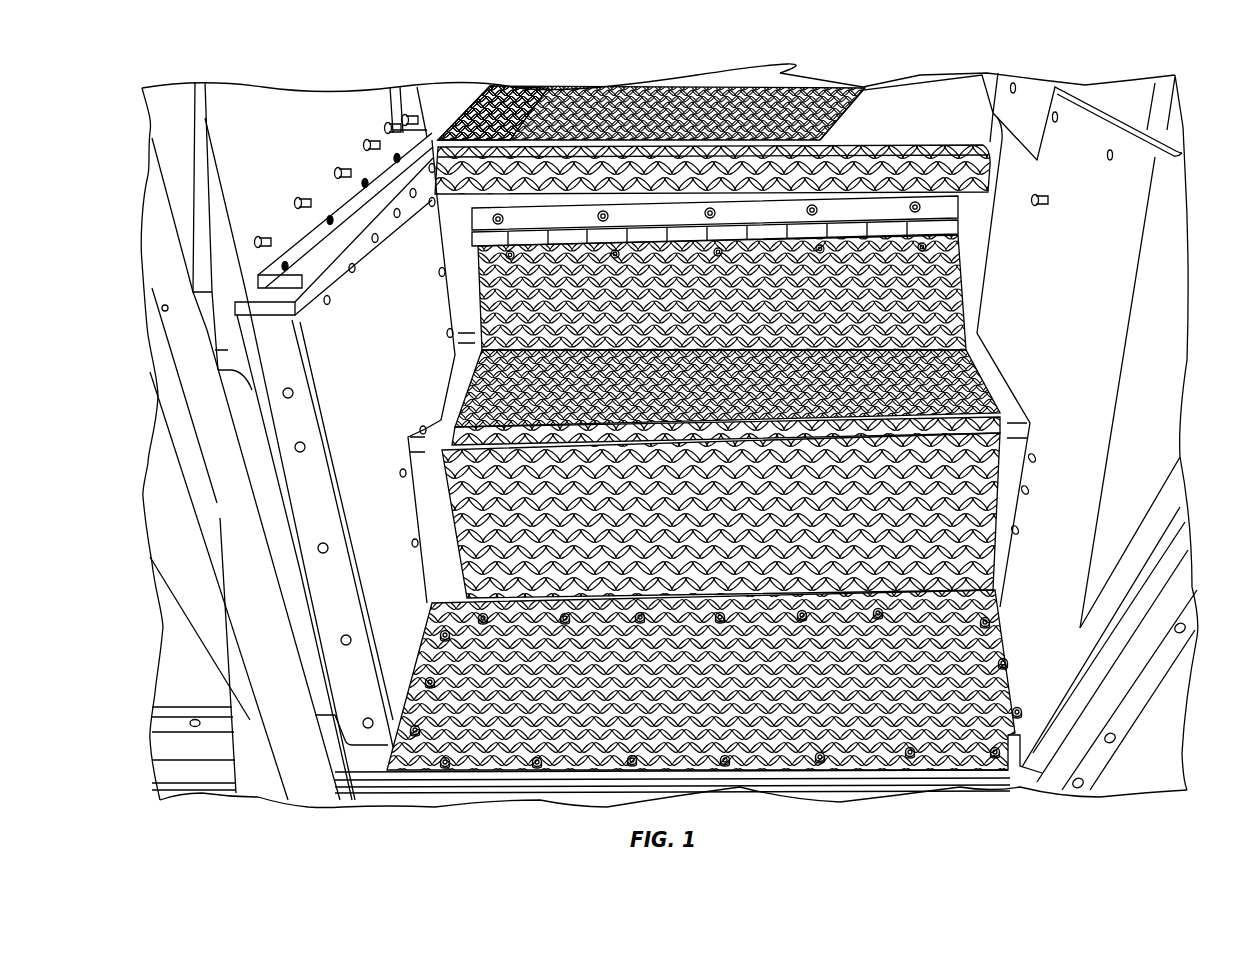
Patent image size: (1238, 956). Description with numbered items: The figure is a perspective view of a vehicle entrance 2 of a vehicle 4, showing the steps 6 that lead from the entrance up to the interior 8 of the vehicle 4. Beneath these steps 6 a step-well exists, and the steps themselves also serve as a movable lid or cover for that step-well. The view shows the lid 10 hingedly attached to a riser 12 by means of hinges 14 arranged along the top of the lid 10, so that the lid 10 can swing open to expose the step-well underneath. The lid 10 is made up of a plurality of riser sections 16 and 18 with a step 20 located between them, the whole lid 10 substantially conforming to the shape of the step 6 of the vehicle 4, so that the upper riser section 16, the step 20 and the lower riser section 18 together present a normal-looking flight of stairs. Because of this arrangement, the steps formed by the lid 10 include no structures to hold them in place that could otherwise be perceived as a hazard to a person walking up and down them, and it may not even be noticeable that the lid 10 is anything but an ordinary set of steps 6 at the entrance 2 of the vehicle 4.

The vehicle entrance 2 is at (1175, 150).
The vehicle 4 is at (197, 583).
The steps 6 is at (1083, 440).
The interior 8 is at (470, 102).
The lid 10 is at (898, 267).
The riser 12 is at (678, 167).
The hinges 14 is at (763, 230).
The riser section 16 is at (492, 317).
The riser section 18 is at (467, 540).
The step 20 is at (463, 402).